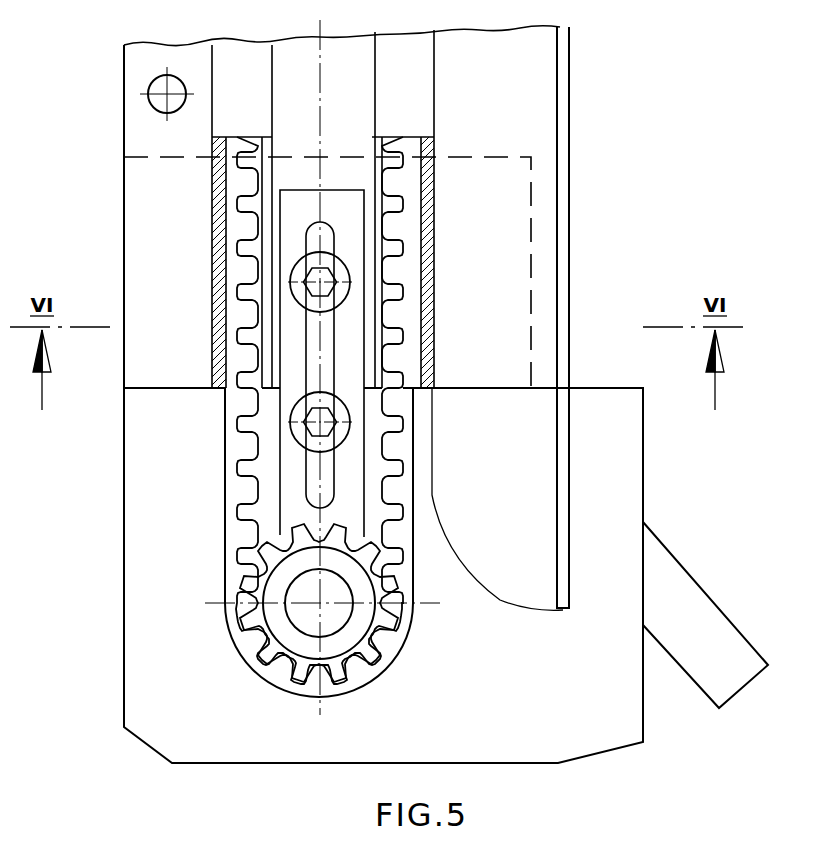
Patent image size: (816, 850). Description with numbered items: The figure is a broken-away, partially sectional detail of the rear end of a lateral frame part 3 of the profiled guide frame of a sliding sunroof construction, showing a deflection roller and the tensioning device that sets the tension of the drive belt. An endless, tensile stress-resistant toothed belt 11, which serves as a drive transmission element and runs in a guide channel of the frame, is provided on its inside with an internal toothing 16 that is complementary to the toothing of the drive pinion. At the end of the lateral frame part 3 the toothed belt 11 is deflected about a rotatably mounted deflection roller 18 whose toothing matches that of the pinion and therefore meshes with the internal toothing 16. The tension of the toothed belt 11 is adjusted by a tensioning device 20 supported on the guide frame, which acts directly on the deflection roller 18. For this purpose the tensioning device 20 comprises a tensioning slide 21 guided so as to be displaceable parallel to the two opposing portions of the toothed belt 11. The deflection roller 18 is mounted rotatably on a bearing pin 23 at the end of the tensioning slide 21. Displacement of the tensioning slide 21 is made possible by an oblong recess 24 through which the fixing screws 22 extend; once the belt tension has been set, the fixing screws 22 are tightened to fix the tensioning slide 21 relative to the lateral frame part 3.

The lateral frame part 3 is at (572, 98).
The toothed belt 11 is at (404, 145).
The internal toothing 16 is at (263, 198).
The deflection roller 18 is at (385, 620).
The tensioning device 20 is at (272, 459).
The tensioning slide 21 is at (347, 470).
The fixing screws 22 is at (343, 418).
The bearing pin 23 is at (295, 608).
The oblong recess 24 is at (327, 347).